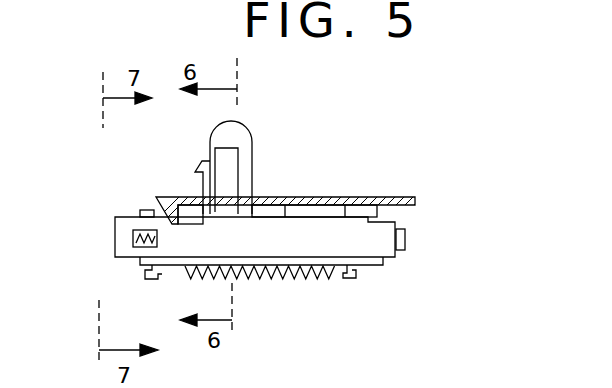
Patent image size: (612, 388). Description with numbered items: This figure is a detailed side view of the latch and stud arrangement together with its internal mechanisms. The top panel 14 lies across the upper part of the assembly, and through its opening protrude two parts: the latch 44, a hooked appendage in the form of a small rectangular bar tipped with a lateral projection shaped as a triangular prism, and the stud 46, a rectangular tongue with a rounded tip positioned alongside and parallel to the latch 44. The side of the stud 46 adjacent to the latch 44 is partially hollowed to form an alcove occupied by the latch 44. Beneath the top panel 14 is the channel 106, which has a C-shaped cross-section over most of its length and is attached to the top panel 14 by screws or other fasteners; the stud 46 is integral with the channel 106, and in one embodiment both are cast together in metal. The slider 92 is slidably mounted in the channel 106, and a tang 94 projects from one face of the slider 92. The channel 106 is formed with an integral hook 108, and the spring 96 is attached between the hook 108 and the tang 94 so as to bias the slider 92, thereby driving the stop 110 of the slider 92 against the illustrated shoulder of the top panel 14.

The top panel 14 is at (388, 197).
The latch 44 is at (202, 161).
The stud 46 is at (252, 128).
The slider 92 is at (115, 233).
The tang 94 is at (357, 283).
The spring 96 is at (257, 282).
The channel 106 is at (145, 210).
The hook 108 is at (148, 283).
The stop 110 is at (193, 224).